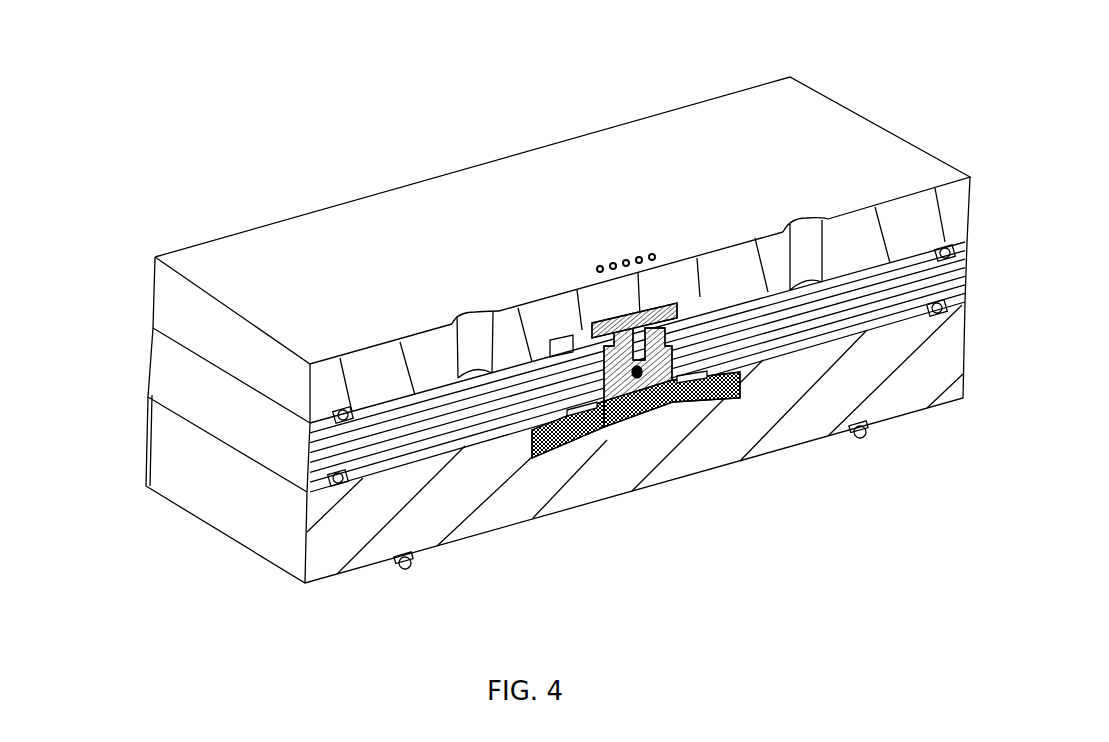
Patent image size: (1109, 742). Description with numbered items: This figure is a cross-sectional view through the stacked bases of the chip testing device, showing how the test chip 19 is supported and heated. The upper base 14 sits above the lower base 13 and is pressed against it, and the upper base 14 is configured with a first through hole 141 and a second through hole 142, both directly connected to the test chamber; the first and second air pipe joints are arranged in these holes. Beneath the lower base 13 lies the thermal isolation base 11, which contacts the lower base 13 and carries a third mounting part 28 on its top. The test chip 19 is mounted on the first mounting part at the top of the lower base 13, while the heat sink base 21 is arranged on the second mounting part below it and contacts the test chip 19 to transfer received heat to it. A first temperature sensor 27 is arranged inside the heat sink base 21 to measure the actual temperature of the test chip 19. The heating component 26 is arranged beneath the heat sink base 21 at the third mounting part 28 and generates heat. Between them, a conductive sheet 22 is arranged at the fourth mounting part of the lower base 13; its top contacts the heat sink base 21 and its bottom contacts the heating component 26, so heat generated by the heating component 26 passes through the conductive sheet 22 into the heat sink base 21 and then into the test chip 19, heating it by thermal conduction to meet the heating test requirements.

The thermal isolation base 11 is at (160, 468).
The lower base 13 is at (162, 375).
The upper base 14 is at (172, 312).
The first through hole 141 is at (473, 317).
The second through hole 142 is at (795, 223).
The test chip 19 is at (635, 332).
The heat sink base 21 is at (606, 366).
The conductive sheet 22 is at (622, 400).
The heating component 26 is at (598, 423).
The first temperature sensor 27 is at (640, 377).
The third mounting part 28 is at (562, 445).